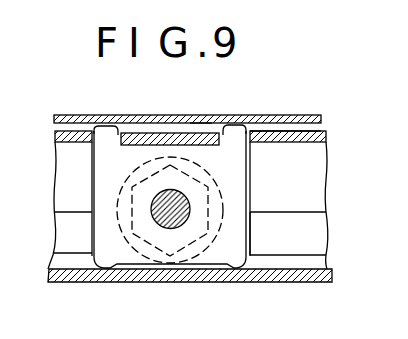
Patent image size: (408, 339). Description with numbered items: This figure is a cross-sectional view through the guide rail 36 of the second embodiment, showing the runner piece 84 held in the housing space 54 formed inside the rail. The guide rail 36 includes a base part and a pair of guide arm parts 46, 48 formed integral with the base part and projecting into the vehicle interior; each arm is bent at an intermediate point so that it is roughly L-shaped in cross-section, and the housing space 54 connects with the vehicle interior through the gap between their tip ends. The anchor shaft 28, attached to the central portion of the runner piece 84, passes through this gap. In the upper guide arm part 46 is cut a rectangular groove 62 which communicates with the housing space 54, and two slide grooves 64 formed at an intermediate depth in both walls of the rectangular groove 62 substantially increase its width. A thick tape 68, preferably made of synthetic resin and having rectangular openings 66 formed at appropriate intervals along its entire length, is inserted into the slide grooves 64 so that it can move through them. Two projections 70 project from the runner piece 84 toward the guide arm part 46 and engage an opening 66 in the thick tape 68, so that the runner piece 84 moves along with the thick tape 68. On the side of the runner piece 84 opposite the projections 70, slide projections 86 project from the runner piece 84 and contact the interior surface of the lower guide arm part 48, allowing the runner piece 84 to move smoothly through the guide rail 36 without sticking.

The anchor shaft 28 is at (162, 229).
The guide rail 36 is at (289, 116).
The guide arm part 46 is at (201, 121).
The guide arm part 48 is at (217, 283).
The housing space 54 is at (302, 203).
The rectangular groove 62 is at (88, 129).
The slide grooves 64 is at (73, 131).
The rectangular openings 66 is at (121, 133).
The thick tape 68 is at (325, 130).
The projections 70 is at (107, 134).
The runner piece 84 is at (251, 233).
The slide projections 86 is at (92, 270).